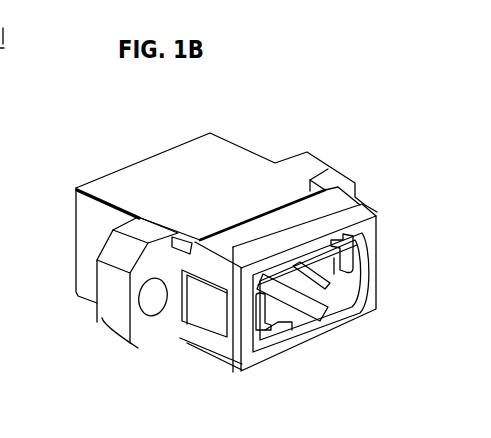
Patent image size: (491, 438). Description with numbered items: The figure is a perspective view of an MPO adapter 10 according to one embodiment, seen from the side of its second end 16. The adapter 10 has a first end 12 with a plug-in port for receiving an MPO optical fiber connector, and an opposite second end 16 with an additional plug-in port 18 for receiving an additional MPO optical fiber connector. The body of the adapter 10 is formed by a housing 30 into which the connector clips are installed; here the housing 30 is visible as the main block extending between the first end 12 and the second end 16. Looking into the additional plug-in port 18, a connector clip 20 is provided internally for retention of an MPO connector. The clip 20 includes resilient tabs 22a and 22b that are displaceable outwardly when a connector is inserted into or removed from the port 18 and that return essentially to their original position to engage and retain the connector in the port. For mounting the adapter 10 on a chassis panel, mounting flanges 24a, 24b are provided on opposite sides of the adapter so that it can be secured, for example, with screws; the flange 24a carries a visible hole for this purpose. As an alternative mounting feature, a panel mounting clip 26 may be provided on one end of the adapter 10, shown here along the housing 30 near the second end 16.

The MPO adapter 10 is at (294, 114).
The first end 12 is at (88, 215).
The second end 16 is at (245, 370).
The additional plug-in port 18 is at (301, 335).
The connector clip 20 is at (311, 299).
The resilient tab 22a is at (261, 274).
The resilient tab 22b is at (354, 250).
The mounting flange 24a is at (115, 305).
The mounting flange 24b is at (342, 192).
The panel mounting clip 26 is at (232, 236).
The housing 30 is at (215, 190).